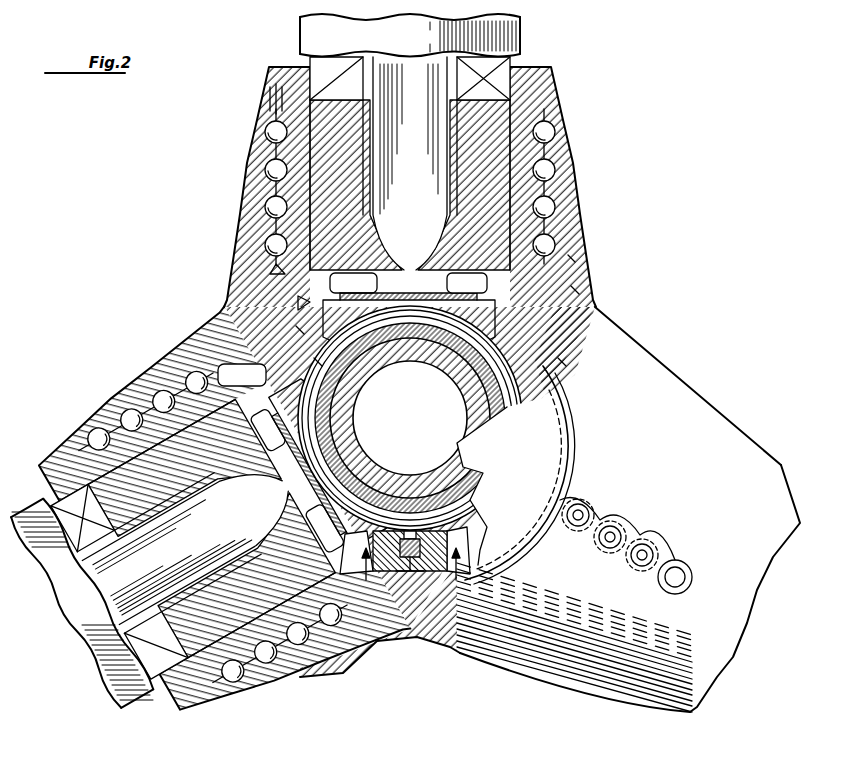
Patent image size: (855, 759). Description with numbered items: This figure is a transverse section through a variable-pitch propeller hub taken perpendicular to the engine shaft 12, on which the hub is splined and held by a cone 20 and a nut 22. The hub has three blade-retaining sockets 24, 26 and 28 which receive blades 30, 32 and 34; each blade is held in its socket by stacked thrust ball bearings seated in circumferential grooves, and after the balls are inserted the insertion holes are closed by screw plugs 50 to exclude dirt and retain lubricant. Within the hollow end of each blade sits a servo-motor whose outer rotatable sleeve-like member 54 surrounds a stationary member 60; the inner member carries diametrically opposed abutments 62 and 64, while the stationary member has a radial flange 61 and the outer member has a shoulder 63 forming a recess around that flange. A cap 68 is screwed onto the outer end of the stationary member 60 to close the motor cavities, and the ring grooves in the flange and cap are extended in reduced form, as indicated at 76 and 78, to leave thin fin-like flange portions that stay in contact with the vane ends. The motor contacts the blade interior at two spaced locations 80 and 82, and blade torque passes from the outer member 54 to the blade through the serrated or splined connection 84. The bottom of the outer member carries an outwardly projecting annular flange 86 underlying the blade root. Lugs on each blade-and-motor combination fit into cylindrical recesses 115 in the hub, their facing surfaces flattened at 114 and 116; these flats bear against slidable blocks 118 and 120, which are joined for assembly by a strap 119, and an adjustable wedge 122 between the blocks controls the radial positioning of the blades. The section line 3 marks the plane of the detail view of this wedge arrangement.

The section line 3- 3 is at (409, 573).
The shaft 12 is at (362, 390).
The cone 20 is at (327, 430).
The nut 22 is at (341, 417).
The blade-retaining socket 24 is at (402, 187).
The blade-retaining socket 26 is at (628, 525).
The blade-retaining socket 28 is at (130, 392).
The blade 30 is at (437, 35).
The blade 32 is at (672, 715).
The blade 34 is at (143, 710).
The screw plug 50 is at (585, 515).
The outer rotatable sleeve-like member 54 is at (407, 168).
The stationary member 60 is at (314, 324).
The radial flange 61 is at (467, 282).
The abutment 62 is at (429, 139).
The shoulder 63 is at (575, 258).
The abutment 64 is at (410, 180).
The cap 68 is at (483, 78).
The extended ring groove 76 is at (296, 293).
The extended ring groove 78 is at (336, 69).
The contact location 80 is at (409, 186).
The contact location 82 is at (251, 105).
The splined connection 84 is at (409, 188).
The annular flange 86 is at (246, 270).
The flat 114 is at (474, 423).
The cylindrical recess 115 is at (300, 330).
The flat 116 is at (570, 275).
The slidable block 118 is at (305, 340).
The strap 119 is at (303, 358).
The slidable block 120 is at (313, 355).
The wedge 122 is at (310, 348).